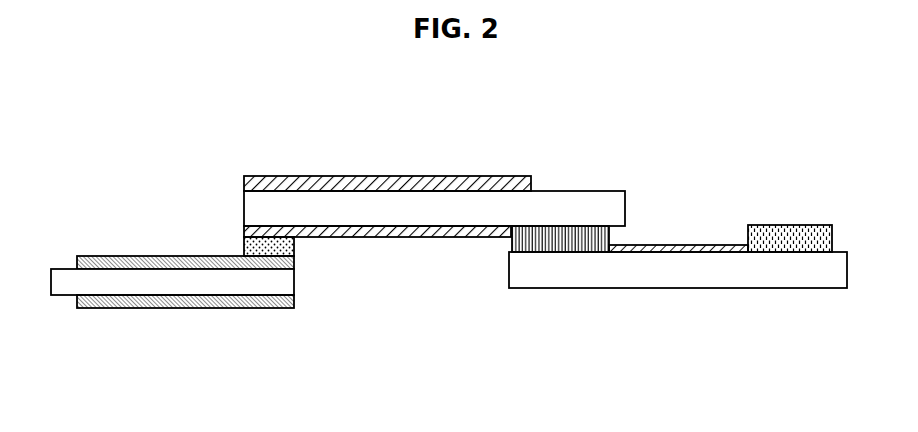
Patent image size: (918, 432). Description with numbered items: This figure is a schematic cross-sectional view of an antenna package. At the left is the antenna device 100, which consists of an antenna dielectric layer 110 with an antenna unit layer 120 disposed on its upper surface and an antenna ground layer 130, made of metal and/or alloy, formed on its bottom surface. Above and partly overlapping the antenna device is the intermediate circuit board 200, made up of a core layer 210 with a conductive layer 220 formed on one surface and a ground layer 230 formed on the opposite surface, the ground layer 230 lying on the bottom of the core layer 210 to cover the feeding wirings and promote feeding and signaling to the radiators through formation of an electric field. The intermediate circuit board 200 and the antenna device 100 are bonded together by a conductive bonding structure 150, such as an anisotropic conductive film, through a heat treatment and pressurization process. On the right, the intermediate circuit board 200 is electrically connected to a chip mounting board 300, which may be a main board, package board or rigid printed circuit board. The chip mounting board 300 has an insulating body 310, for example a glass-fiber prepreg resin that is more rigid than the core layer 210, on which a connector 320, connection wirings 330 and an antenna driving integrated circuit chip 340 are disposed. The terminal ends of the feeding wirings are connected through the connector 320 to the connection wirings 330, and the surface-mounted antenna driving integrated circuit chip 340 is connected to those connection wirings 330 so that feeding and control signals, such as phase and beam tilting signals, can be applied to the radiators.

The antenna device 100 is at (171, 283).
The antenna dielectric layer 110 is at (238, 285).
The antenna unit layer 120 is at (143, 256).
The antenna ground layer 130 is at (148, 302).
The conductive bonding structure 150 is at (272, 245).
The intermediate circuit board 200 is at (434, 192).
The core layer 210 is at (327, 212).
The conductive layer 220 is at (382, 235).
The ground layer 230 is at (325, 176).
The chip mounting board 300 is at (678, 266).
The insulating body 310 is at (670, 277).
The connector 320 is at (545, 248).
The connection wirings 330 is at (680, 245).
The antenna driving integrated circuit chip 340 is at (768, 225).